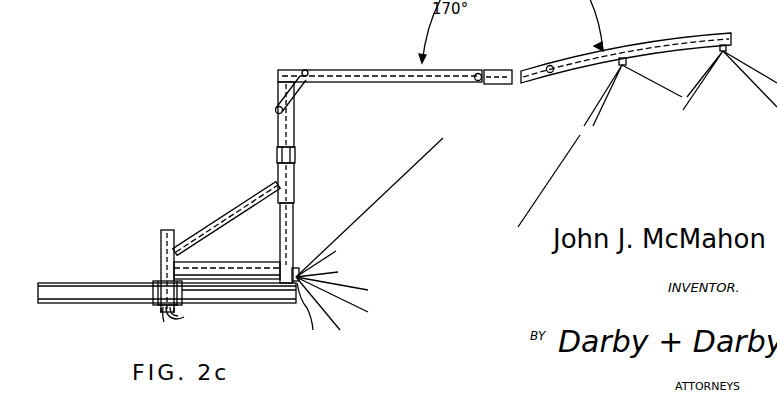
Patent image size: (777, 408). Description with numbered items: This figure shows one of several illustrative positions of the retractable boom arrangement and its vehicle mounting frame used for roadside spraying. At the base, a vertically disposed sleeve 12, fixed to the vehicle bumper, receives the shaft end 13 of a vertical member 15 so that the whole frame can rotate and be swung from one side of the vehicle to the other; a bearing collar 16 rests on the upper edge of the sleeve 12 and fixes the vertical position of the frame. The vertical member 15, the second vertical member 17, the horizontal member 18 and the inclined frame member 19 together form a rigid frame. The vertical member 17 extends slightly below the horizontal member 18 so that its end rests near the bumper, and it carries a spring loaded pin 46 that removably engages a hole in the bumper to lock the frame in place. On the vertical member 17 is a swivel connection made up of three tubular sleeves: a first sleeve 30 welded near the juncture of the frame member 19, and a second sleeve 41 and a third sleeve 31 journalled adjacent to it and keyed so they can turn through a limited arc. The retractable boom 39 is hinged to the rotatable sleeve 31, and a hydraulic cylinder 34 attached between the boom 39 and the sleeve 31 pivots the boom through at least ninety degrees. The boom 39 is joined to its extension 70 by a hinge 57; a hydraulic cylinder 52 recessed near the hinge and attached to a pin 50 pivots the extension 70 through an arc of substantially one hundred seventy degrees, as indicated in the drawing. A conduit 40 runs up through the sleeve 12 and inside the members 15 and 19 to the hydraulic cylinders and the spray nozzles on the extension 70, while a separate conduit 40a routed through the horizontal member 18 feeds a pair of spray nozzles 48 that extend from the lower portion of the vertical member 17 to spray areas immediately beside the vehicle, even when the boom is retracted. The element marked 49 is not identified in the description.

The vertically disposed sleeve 12 is at (166, 295).
The shaft end 13 is at (152, 308).
The vertical member 15 is at (163, 240).
The bearing collar 16 is at (156, 282).
The vertical member 17 is at (283, 230).
The horizontal member 18 is at (203, 265).
The frame member 19 is at (228, 203).
The first sleeve 30 is at (294, 185).
The third sleeve 31 is at (294, 130).
The hydraulic cylinder 34 is at (297, 96).
The retractable boom 39 is at (366, 71).
The conduit 40 is at (178, 318).
The conduit 40a is at (167, 318).
The second sleeve 41 is at (295, 157).
The spring loaded pin 46 is at (299, 284).
The spray nozzles 48 is at (296, 277).
The rail section 49 is at (242, 298).
The pin 50 is at (477, 72).
The hydraulic cylinder 52 is at (497, 69).
The hinge 57 is at (522, 72).
The extension 70 is at (690, 41).